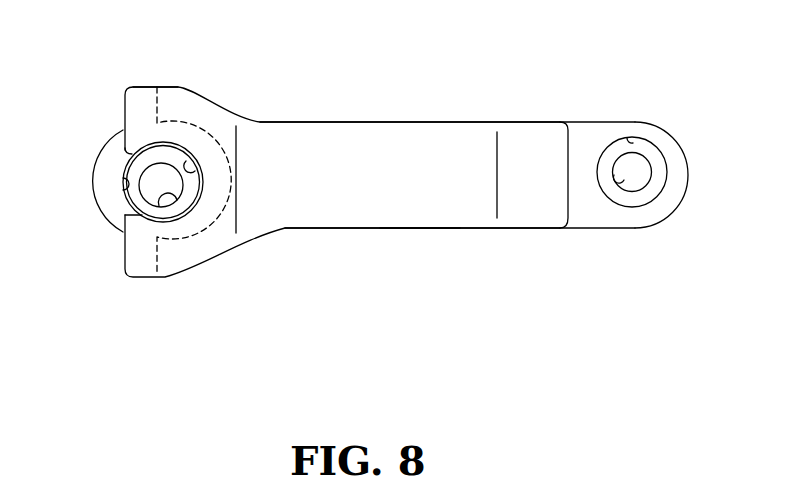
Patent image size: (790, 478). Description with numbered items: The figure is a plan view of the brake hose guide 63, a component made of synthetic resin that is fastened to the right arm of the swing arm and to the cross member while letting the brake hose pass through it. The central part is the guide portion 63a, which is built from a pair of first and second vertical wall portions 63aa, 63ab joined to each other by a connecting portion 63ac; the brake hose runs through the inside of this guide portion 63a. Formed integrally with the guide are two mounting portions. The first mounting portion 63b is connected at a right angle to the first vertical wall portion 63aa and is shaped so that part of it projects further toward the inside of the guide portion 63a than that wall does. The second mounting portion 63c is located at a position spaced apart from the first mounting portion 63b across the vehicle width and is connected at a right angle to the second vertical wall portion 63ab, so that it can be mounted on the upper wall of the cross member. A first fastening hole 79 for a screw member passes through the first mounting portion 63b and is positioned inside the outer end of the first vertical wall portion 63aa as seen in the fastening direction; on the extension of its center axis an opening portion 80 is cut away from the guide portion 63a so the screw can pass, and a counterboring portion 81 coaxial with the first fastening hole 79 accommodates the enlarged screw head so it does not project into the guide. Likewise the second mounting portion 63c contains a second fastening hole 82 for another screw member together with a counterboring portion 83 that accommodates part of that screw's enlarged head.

The brake hose guide 63 is at (137, 284).
The guide portion 63a is at (365, 114).
The first vertical wall portion 63aa is at (140, 113).
The second vertical wall portion 63ab is at (571, 157).
The connecting portion 63ac is at (412, 198).
The first mounting portion 63b is at (117, 215).
The second mounting portion 63c is at (630, 221).
The first fastening hole 79 is at (176, 192).
The opening portion 80 is at (194, 161).
The counterboring portion 81 is at (125, 184).
The second fastening hole 82 is at (623, 177).
The counterboring portion 83 is at (632, 142).